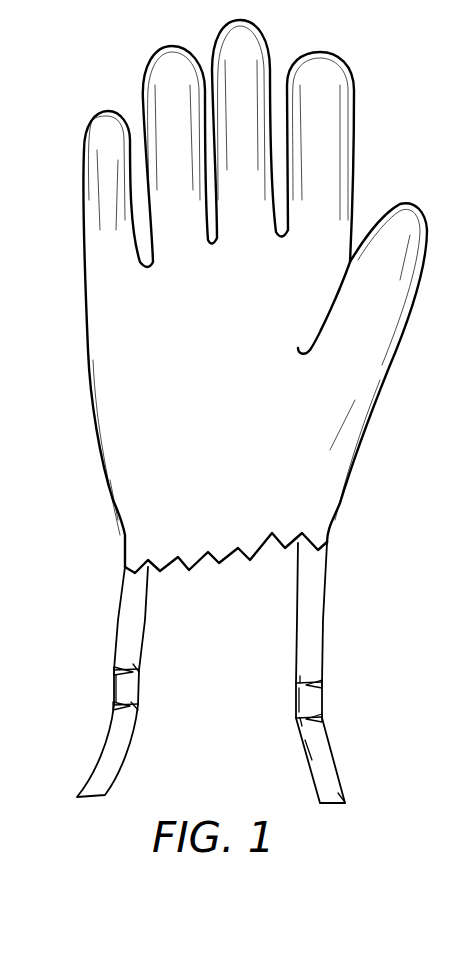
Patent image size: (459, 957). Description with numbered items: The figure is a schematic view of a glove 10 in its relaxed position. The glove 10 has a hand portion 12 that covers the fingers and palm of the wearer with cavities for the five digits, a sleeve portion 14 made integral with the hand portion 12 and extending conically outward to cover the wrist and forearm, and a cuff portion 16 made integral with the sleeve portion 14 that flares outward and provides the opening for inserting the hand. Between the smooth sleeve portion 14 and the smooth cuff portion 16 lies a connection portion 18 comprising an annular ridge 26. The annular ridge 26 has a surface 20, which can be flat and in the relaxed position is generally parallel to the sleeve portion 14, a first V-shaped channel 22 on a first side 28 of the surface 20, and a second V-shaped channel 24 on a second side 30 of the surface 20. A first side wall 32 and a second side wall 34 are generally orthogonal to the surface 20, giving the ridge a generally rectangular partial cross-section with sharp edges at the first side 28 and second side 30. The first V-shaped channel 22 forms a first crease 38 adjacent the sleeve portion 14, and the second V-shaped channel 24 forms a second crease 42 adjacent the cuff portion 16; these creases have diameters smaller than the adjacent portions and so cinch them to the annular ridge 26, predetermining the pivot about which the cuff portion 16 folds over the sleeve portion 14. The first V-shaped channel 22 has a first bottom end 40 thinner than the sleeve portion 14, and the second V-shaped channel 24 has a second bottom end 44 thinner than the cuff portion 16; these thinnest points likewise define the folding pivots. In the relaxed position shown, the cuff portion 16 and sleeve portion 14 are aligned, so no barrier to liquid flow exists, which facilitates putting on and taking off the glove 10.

The glove 10 is at (118, 92).
The hand portion 12 is at (93, 372).
The sleeve portion 14 is at (320, 590).
The cuff portion 16 is at (345, 803).
The connection portion 18 is at (137, 685).
The surface 20 is at (322, 700).
The first V-shaped channel 22 is at (318, 683).
The second V-shaped channel 24 is at (316, 719).
The annular ridge 26 is at (121, 683).
The first side 28 is at (120, 672).
The second side 30 is at (115, 704).
The first side wall 32 is at (318, 682).
The second side wall 34 is at (322, 718).
The first crease 38 is at (139, 669).
The first bottom end 40 is at (316, 686).
The second crease 42 is at (138, 709).
The second bottom end 44 is at (317, 716).